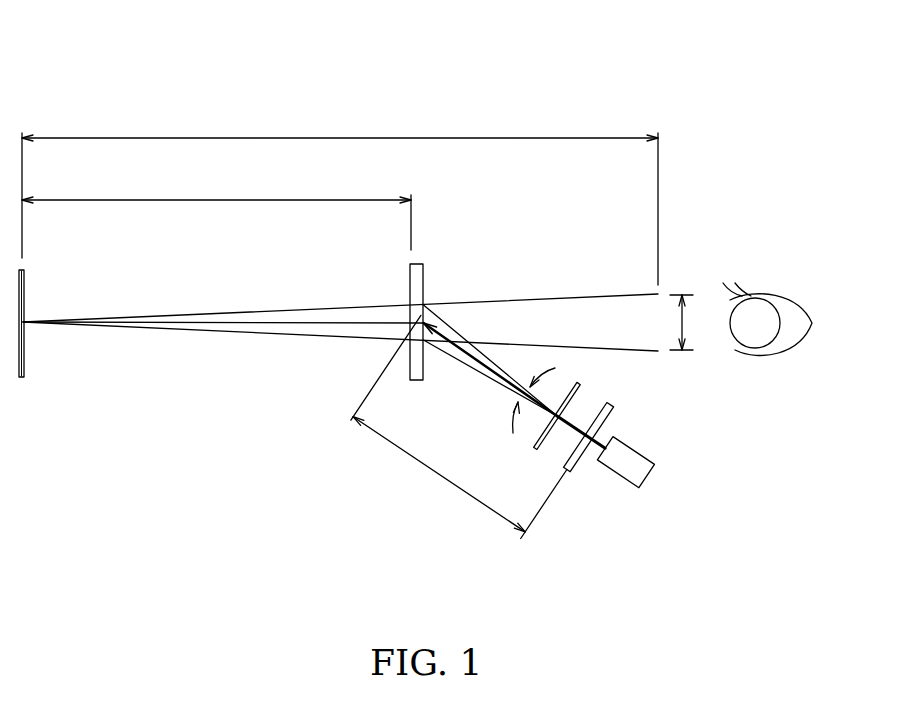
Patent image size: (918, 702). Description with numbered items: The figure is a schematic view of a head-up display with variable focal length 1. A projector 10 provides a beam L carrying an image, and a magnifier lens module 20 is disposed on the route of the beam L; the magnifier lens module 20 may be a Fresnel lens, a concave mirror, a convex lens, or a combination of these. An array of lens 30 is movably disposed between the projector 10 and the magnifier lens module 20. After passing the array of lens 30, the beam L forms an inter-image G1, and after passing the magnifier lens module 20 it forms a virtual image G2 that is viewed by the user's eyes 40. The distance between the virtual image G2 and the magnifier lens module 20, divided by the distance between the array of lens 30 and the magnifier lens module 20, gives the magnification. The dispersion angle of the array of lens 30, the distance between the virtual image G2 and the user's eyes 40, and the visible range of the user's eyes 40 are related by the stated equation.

The head-up display with variable focal length 1 is at (78, 60).
The projector 10 is at (618, 470).
The magnifier lens module 20 is at (422, 279).
The array of lens 30 is at (608, 415).
The user's eyes 40 is at (738, 337).
The inter-image G1 is at (548, 443).
The virtual image G2 is at (24, 358).
The beam L is at (474, 360).